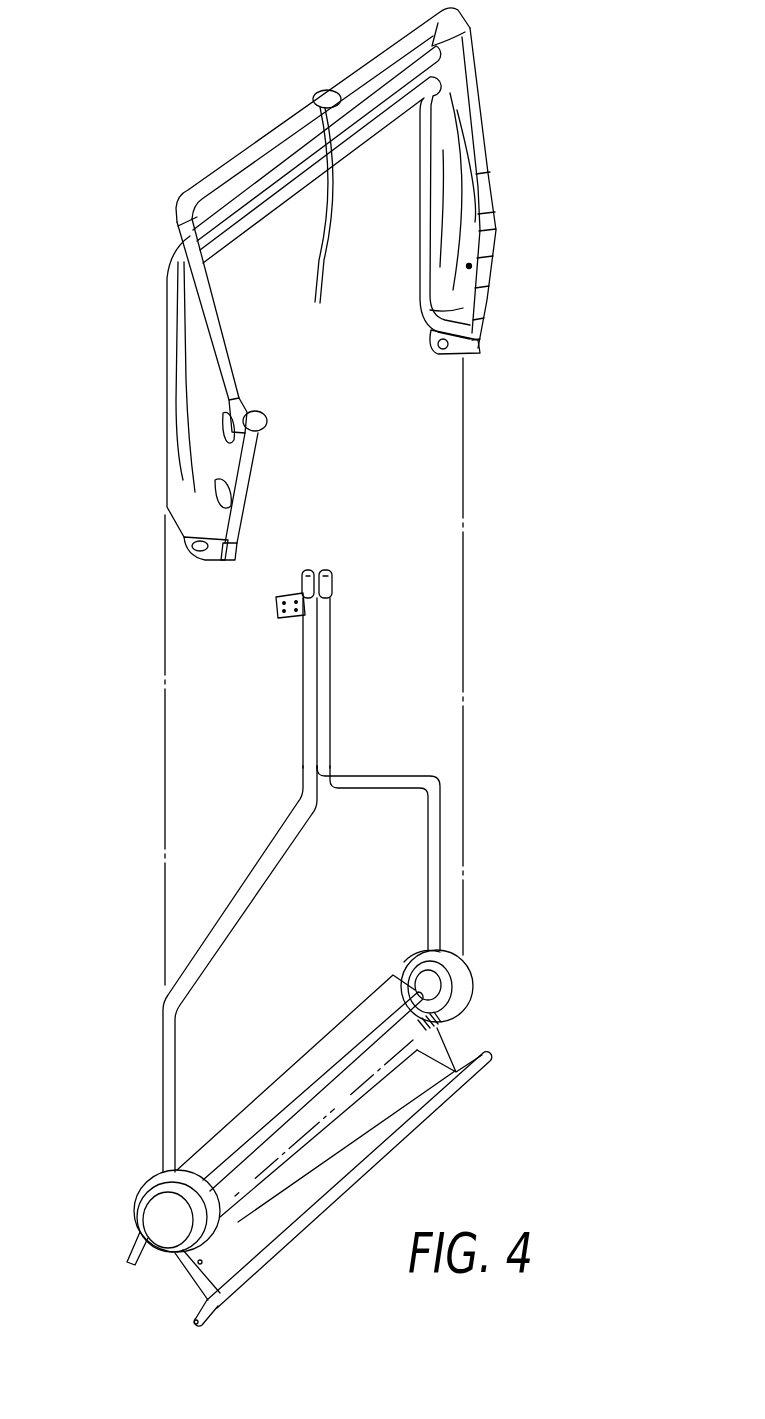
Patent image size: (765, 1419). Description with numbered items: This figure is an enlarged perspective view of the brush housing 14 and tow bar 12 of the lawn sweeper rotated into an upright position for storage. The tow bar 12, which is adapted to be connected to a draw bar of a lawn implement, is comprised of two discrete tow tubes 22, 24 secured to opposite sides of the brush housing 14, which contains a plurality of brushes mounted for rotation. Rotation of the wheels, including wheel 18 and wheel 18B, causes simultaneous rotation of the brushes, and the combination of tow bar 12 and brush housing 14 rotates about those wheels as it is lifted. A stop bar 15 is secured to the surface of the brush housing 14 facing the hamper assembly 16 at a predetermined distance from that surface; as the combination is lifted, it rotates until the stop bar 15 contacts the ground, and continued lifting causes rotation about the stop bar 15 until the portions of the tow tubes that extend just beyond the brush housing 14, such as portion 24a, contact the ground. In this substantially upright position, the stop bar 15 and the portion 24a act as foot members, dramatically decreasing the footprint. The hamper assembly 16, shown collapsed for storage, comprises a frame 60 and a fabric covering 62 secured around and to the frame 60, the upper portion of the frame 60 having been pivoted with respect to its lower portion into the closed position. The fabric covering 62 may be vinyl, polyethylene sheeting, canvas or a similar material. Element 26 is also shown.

The tow bar 12 is at (372, 668).
The brush housing 14 is at (273, 1085).
The stop bar 15 is at (202, 1321).
The hamper assembly 16 is at (528, 141).
The wheel 18 is at (477, 970).
The wheel 18B is at (143, 1190).
The tow tube 22 is at (407, 773).
The tow tube 24 is at (268, 843).
The portion of tow tube 24a is at (123, 1254).
The clip 26 is at (327, 578).
The frame 60 is at (190, 188).
The fabric covering 62 is at (268, 153).